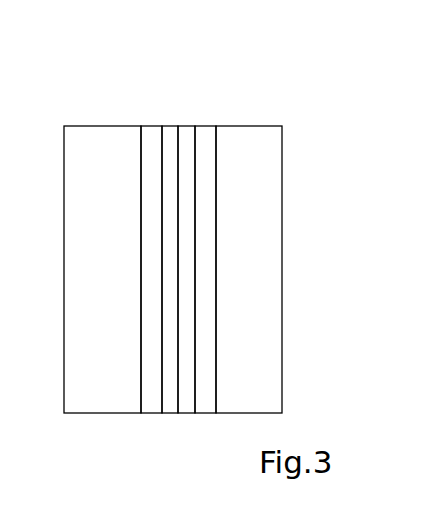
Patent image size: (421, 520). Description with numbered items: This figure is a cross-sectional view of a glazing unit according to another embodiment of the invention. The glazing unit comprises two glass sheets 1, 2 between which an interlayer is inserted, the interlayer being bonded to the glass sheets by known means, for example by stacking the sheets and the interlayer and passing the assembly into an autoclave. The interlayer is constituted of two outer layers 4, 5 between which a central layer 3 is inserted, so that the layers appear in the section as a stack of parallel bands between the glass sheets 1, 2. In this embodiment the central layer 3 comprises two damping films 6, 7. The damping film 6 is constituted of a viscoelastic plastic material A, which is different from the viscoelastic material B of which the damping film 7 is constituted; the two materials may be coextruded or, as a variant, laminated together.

The glass sheet 1 is at (66, 230).
The glass sheet 2 is at (278, 203).
The central layer 3 is at (178, 290).
The outer layer 4 is at (151, 133).
The outer layer 5 is at (205, 133).
The damping film 6 is at (168, 407).
The damping film 7 is at (186, 407).